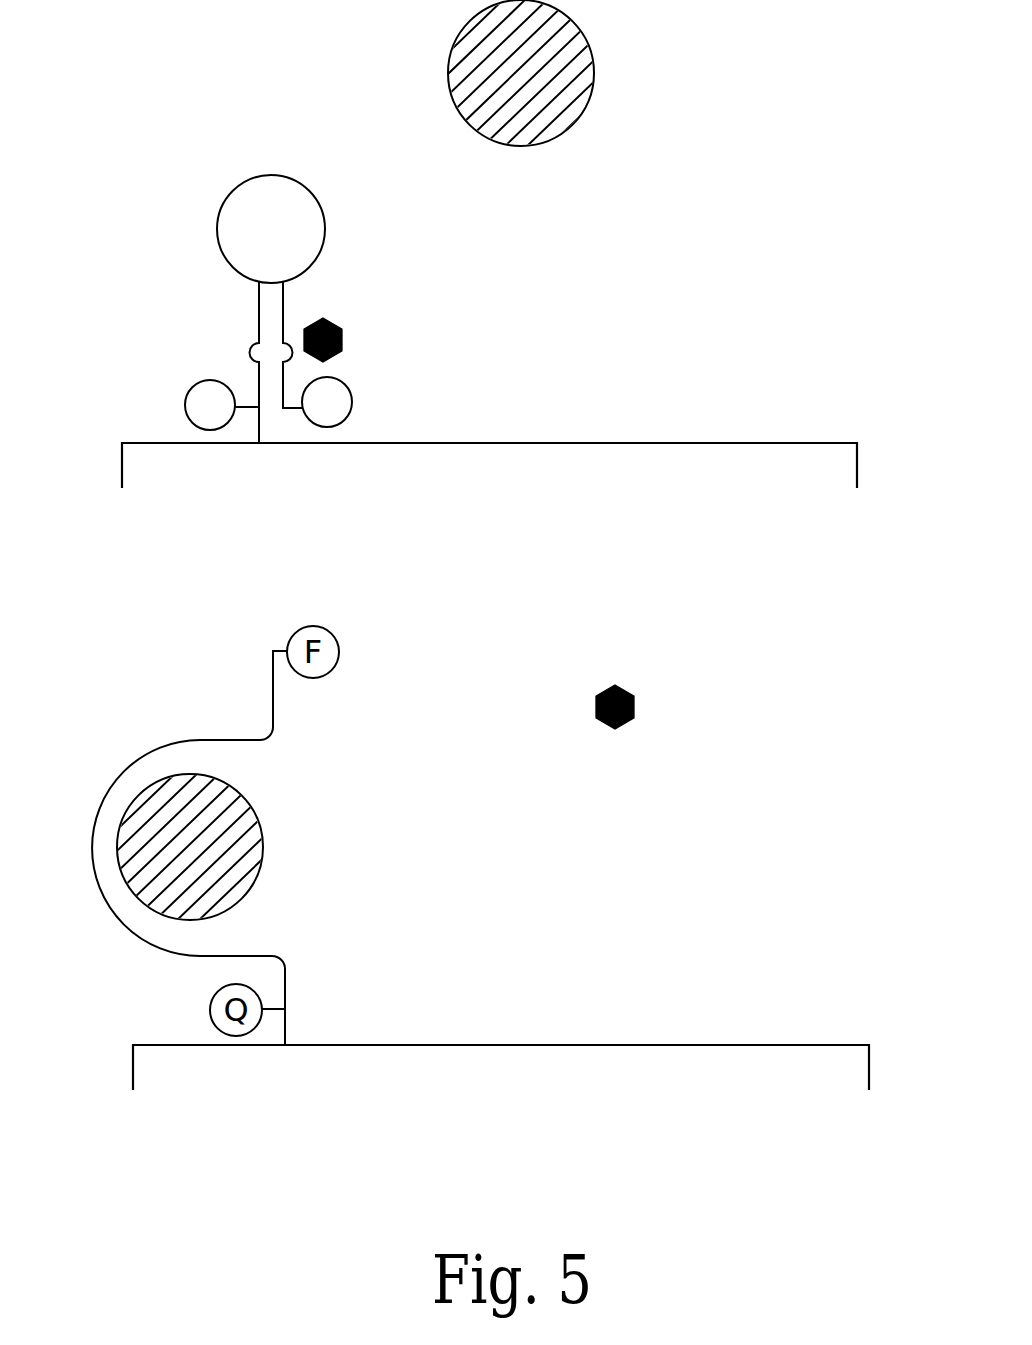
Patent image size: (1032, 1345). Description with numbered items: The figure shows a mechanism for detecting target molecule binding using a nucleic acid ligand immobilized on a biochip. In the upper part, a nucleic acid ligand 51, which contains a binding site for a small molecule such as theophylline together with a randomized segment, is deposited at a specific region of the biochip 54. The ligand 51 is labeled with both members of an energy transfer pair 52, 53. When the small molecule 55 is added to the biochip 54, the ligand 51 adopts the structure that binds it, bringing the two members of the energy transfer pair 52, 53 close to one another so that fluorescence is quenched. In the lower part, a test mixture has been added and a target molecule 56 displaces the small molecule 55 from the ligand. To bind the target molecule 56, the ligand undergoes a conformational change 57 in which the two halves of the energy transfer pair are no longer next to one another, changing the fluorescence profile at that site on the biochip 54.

The nucleic acid ligand 51 is at (252, 229).
The energy transfer pair member 52 is at (193, 405).
The energy transfer pair member 53 is at (353, 402).
The biochip 54 is at (527, 464).
The small molecule 55 is at (347, 331).
The target molecule 56 is at (363, 461).
The conformationally changed ligand 57 is at (153, 848).